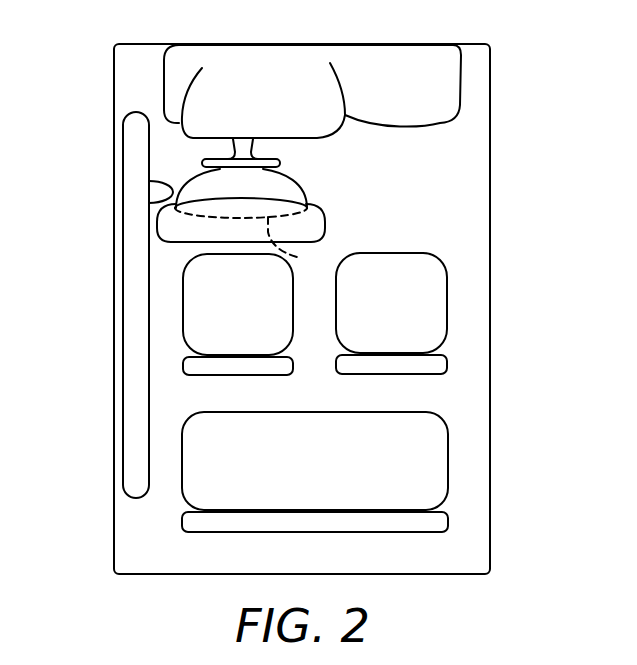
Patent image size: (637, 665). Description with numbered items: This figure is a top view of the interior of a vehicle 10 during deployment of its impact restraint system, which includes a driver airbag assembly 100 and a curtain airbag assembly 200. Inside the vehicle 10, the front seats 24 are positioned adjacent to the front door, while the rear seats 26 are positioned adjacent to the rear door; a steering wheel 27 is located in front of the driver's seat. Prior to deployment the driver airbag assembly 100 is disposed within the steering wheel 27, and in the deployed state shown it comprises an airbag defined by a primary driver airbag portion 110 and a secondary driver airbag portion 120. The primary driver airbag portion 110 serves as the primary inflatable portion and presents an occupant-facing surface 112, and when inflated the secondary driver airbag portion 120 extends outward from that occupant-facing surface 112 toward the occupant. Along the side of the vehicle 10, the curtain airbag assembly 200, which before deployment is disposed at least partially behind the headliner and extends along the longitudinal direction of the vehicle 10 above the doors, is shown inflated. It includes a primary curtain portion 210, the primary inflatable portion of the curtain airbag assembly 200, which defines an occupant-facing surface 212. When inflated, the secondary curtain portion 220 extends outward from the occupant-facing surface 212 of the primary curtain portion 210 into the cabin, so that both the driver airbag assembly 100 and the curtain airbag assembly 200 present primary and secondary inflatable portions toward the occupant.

The vehicle 10 is at (512, 72).
The front seats 24 is at (262, 375).
The rear seats 26 is at (397, 533).
The steering wheel 27 is at (281, 163).
The driver airbag assembly 100 is at (286, 228).
The primary driver airbag portion 110 is at (298, 193).
The occupant-facing surface 112 is at (302, 245).
The secondary driver airbag portion 120 is at (172, 243).
The curtain airbag assembly 200 is at (136, 335).
The primary curtain portion 210 is at (123, 151).
The occupant-facing surface 212 is at (150, 392).
The secondary curtain portion 220 is at (162, 190).